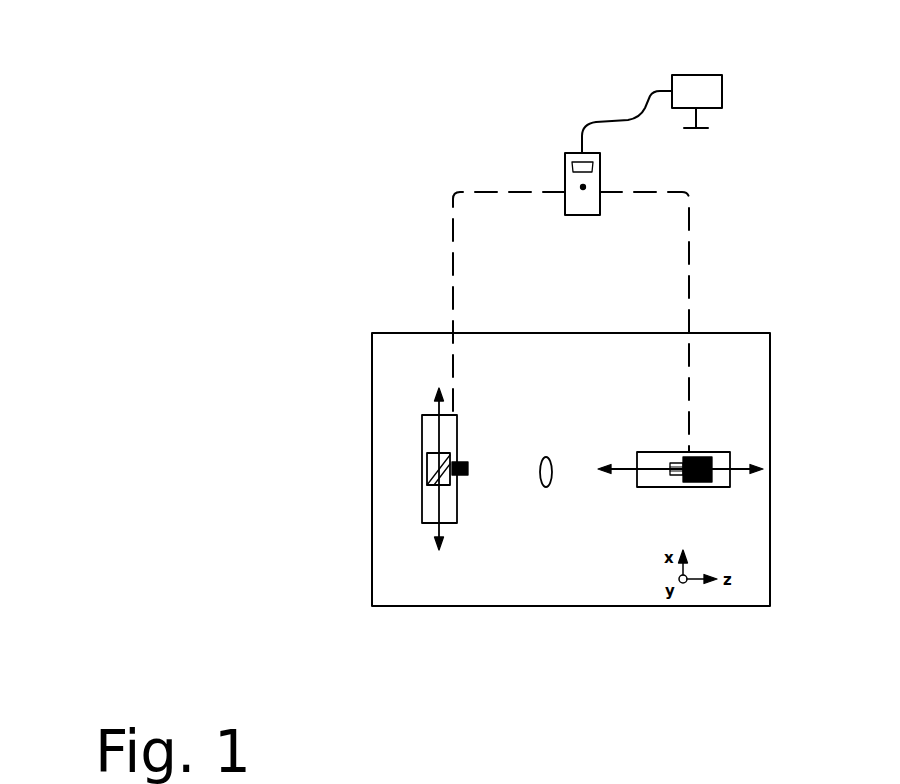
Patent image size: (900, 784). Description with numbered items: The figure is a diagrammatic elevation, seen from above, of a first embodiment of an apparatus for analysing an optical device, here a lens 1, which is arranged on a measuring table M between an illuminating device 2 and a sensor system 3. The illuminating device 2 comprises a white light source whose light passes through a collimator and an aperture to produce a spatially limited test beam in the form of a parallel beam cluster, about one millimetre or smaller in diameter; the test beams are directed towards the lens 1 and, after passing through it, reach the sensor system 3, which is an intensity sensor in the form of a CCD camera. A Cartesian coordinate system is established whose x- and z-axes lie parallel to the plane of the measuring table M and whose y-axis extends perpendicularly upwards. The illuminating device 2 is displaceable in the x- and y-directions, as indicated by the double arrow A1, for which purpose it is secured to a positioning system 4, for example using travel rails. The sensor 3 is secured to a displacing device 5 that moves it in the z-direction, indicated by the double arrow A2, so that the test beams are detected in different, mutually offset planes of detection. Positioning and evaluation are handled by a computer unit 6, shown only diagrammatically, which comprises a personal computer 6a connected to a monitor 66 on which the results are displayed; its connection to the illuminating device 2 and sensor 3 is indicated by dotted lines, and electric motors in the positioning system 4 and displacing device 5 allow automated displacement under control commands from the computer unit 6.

The lens 1 is at (547, 440).
The illuminating device 2 is at (468, 457).
The sensor system 3 is at (695, 455).
The positioning system 4 is at (430, 481).
The displacing device 5 is at (668, 492).
The computer unit 6 is at (558, 122).
The personal computer 6a is at (575, 223).
The monitor / evaluation unit 66 is at (733, 88).
The double arrow A1 is at (437, 437).
The double arrow A2 is at (753, 462).
The measuring table M is at (742, 330).